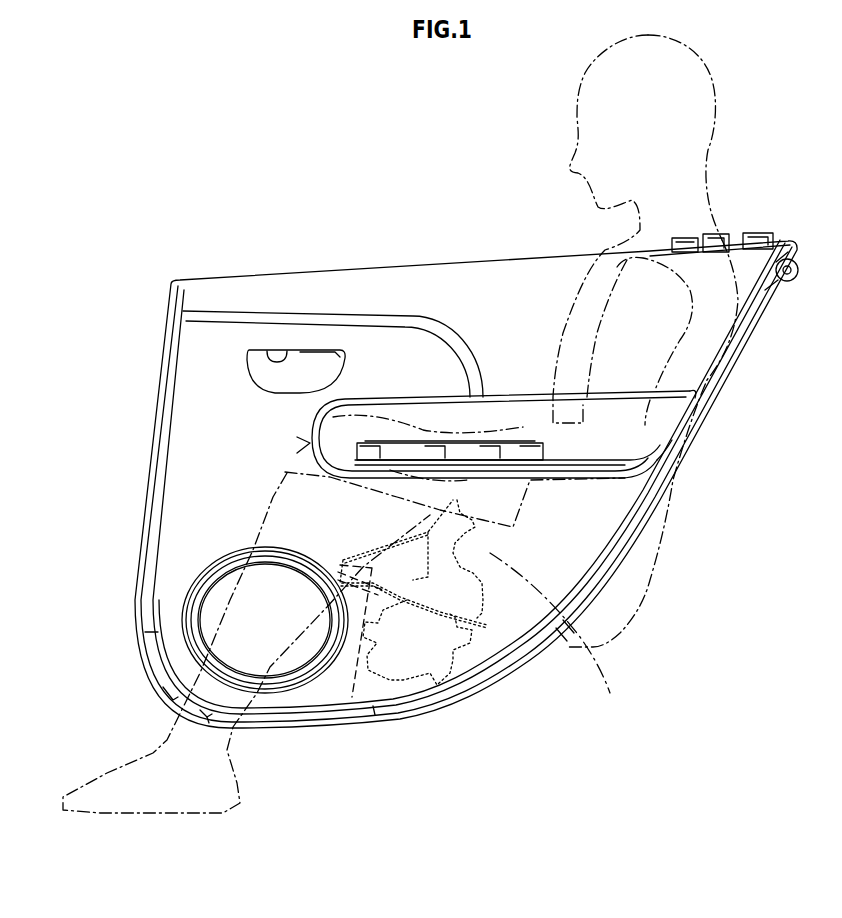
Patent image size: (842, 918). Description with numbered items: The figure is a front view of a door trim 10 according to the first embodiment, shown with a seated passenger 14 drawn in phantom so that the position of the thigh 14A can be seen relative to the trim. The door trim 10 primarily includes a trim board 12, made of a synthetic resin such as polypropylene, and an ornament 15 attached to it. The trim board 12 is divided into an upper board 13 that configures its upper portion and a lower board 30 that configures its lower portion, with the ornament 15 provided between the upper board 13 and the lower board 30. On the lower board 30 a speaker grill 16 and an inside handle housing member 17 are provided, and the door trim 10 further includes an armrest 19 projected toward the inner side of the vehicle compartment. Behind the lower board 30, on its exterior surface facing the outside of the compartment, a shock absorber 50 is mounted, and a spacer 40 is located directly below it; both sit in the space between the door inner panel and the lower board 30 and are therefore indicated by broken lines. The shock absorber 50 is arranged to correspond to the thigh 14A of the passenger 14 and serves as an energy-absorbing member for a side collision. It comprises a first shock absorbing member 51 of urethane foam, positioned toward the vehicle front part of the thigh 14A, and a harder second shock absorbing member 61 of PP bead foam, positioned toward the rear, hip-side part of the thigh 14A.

The door trim 10 is at (210, 262).
The trim board 12 is at (424, 484).
The upper board 13 is at (200, 294).
The lower board 30 is at (195, 404).
The passenger 14 is at (685, 117).
The thigh 14A is at (559, 639).
The ornament 15 is at (660, 420).
The speaker grill 16 is at (212, 607).
The inside handle housing member 17 is at (268, 352).
The armrest 19 is at (497, 428).
The spacer 40 is at (403, 660).
The shock absorber 50 is at (368, 525).
The first shock absorbing member 51 is at (458, 618).
The second shock absorbing member 61 is at (352, 697).